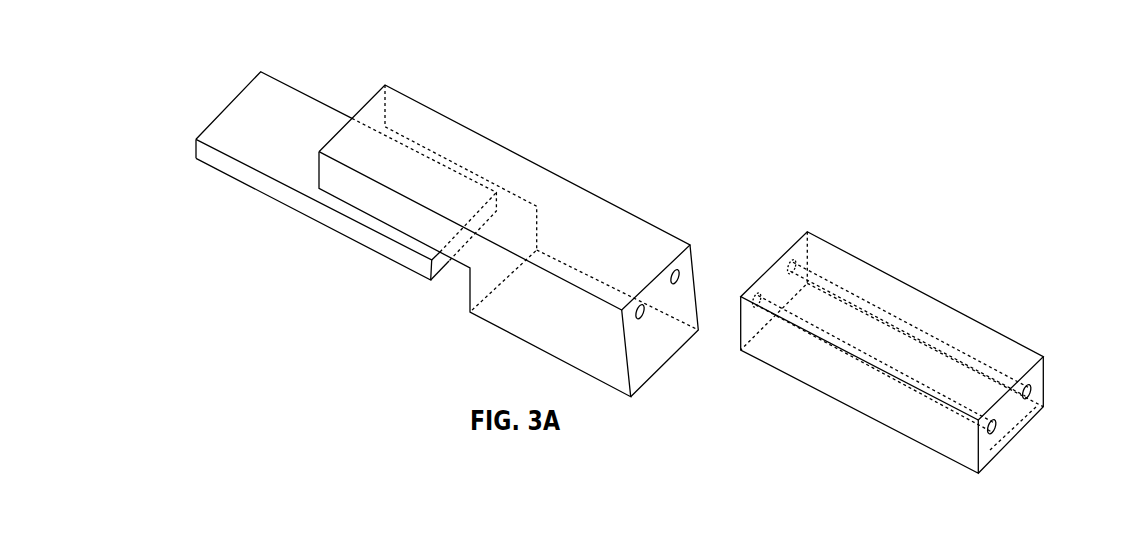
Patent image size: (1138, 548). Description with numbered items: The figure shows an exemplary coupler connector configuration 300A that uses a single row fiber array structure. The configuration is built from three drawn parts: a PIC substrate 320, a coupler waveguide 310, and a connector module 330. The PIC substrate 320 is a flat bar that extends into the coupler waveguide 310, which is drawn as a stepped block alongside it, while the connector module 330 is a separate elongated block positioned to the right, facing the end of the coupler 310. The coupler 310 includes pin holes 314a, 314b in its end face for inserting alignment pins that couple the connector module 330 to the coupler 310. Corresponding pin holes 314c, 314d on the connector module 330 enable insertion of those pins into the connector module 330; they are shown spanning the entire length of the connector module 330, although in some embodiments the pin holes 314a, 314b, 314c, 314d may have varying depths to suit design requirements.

The coupler connector configuration 300A is at (805, 121).
The coupler waveguide 310 is at (411, 99).
The PIC substrate 320 is at (208, 124).
The connector module 330 is at (848, 250).
The pin hole 314a is at (637, 319).
The pin hole 314b is at (677, 268).
The pin hole 314c is at (988, 430).
The pin hole 314d is at (1028, 384).